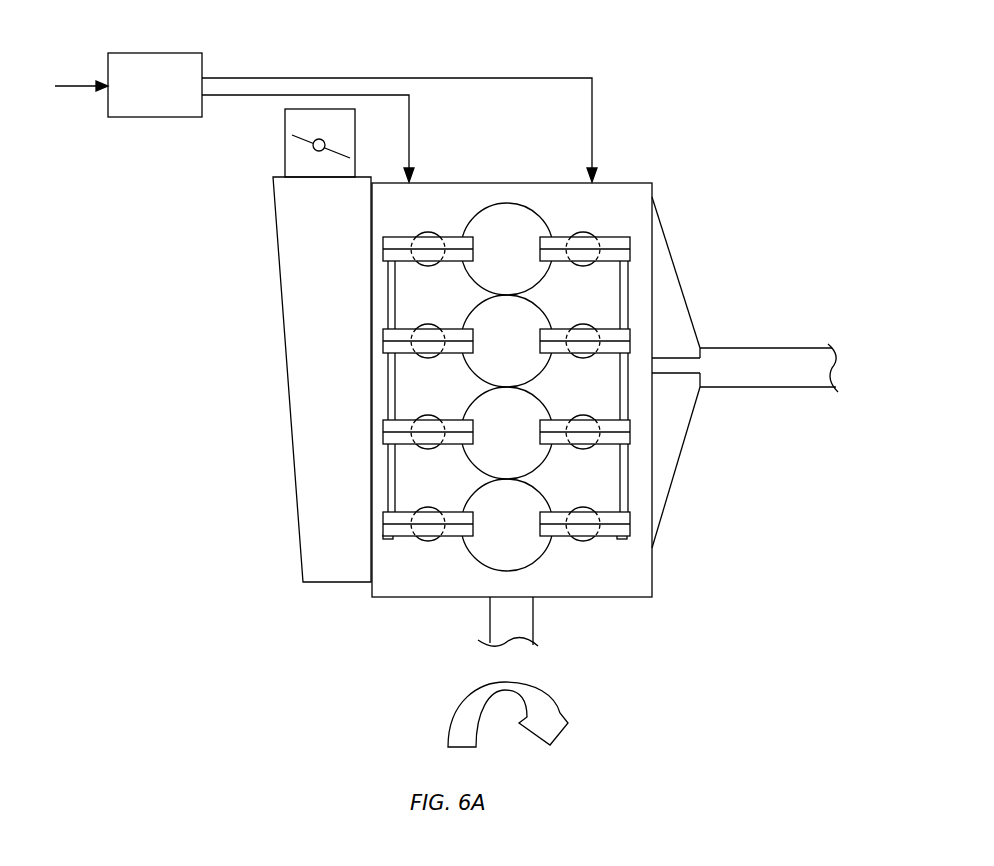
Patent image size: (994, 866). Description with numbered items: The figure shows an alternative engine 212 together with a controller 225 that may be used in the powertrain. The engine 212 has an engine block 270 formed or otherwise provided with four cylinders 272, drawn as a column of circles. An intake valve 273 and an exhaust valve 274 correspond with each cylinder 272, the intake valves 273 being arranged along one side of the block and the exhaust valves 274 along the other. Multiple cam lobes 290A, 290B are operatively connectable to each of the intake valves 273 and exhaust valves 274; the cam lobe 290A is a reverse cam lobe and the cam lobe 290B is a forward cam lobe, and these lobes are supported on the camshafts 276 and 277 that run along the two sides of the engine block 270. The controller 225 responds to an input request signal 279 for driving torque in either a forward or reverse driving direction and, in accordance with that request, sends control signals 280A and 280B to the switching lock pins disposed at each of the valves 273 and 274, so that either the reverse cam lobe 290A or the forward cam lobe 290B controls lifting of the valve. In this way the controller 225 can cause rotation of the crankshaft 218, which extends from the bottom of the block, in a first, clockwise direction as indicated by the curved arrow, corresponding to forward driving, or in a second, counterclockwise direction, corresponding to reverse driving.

The engine 212 is at (699, 166).
The crankshaft 218 is at (490, 620).
The controller 225 is at (175, 100).
The engine block 270 is at (635, 598).
The cylinders 272 is at (485, 287).
The intake valve 273 is at (420, 235).
The exhaust valve 274 is at (587, 233).
The camshaft 276 is at (387, 492).
The camshaft 277 is at (628, 477).
The input request signal 279 is at (80, 86).
The control signal 280A is at (253, 95).
The control signal 280B is at (238, 78).
The reverse cam lobe 290A is at (475, 263).
The forward cam lobe 290B is at (453, 237).